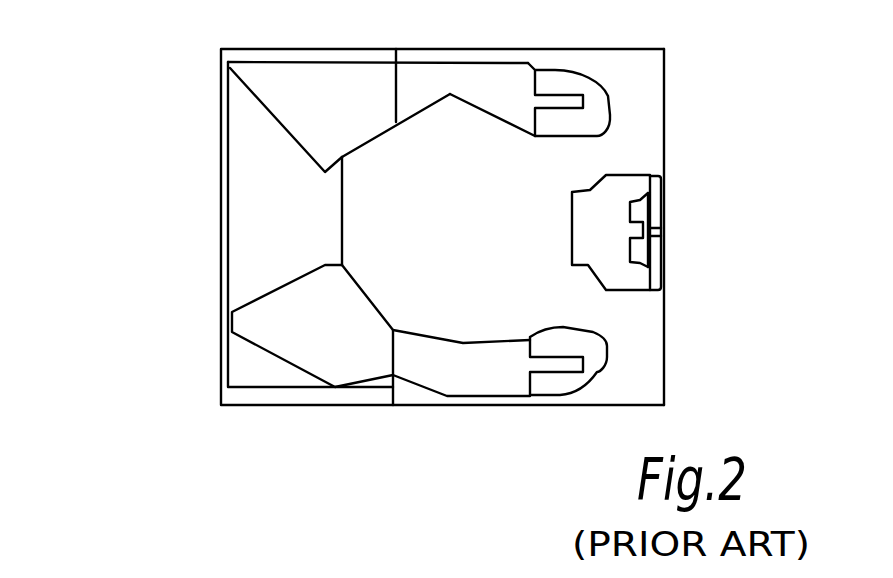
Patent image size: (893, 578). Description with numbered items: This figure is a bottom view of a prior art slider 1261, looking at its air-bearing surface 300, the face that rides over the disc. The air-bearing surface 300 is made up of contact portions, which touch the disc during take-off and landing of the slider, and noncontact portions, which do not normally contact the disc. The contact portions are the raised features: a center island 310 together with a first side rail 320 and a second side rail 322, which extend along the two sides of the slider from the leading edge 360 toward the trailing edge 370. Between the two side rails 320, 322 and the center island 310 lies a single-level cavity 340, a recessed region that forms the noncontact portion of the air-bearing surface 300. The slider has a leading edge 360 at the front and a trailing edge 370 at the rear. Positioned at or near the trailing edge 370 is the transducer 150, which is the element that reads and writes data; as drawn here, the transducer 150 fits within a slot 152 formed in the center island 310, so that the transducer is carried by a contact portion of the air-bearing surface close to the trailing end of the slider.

The slider 1261 is at (115, 89).
The transducer 150 is at (663, 230).
The slot 152 is at (663, 210).
The air-bearing surface 300 is at (650, 336).
The center island 310 is at (617, 187).
The first side rail 320 is at (498, 78).
The second side rail 322 is at (475, 383).
The single-level cavity 340 is at (385, 177).
The leading edge 360 is at (221, 248).
The trailing edge 370 is at (666, 312).